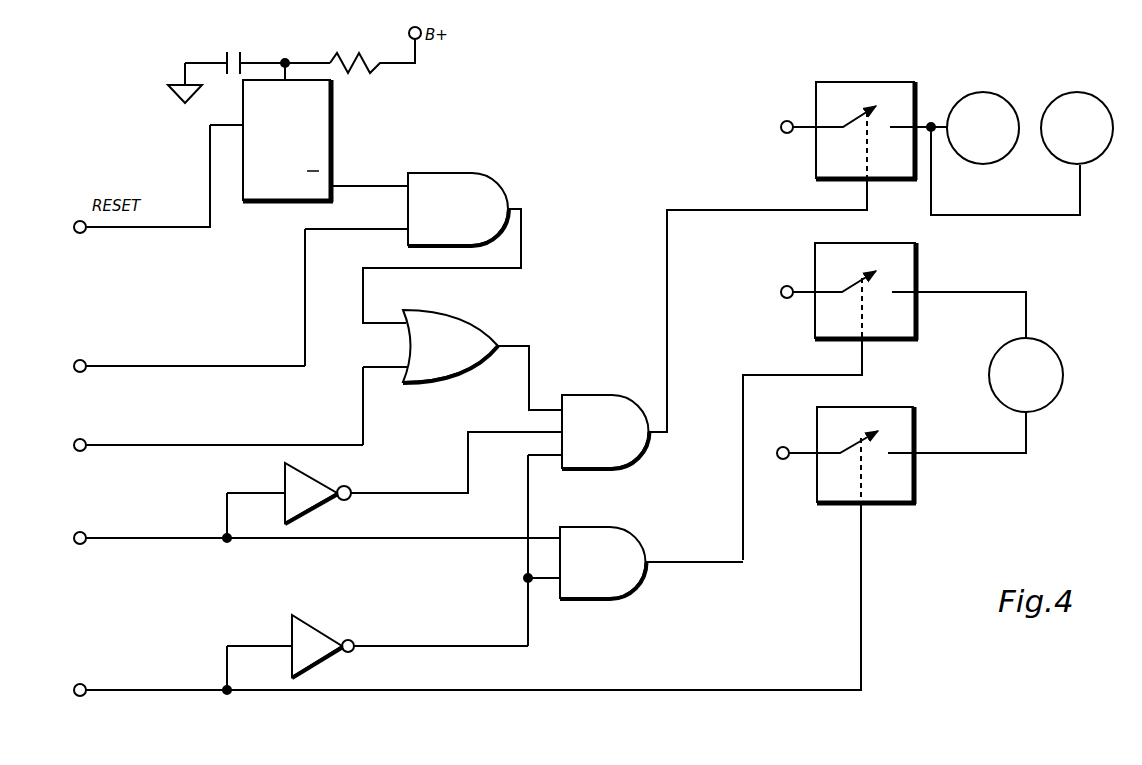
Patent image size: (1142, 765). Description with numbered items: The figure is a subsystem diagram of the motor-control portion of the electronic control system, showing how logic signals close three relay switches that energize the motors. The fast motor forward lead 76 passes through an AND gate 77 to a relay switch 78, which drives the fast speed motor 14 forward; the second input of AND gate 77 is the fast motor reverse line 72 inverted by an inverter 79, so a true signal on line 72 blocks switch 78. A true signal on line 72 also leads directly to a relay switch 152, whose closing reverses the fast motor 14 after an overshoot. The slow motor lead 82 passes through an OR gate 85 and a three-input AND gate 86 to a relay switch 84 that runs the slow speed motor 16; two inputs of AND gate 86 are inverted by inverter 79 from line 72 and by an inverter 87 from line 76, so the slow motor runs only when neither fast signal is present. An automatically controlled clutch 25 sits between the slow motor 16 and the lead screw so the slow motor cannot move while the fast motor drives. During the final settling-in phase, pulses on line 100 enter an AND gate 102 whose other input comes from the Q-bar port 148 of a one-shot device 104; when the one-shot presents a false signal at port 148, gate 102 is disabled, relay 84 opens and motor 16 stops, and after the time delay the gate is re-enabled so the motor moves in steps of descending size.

The one-shot device 104 is at (333, 115).
The Q-bar port 148 is at (334, 184).
The AND gate 102 is at (510, 157).
The line 100 is at (230, 363).
The OR gate 85 is at (497, 333).
The lead 82 is at (220, 450).
The inverter 87 is at (322, 475).
The lead 76 is at (155, 543).
The AND gate 86 is at (614, 392).
The AND gate 77 is at (603, 604).
The inverter 79 is at (321, 623).
The fast motor reverse line 72 is at (207, 685).
The relay switch 84 is at (812, 177).
The slow speed motor 16 is at (961, 164).
The clutch 25 is at (1069, 168).
The relay switch 78 is at (922, 278).
The fast speed motor 14 is at (1059, 398).
The relay switch 152 is at (816, 505).